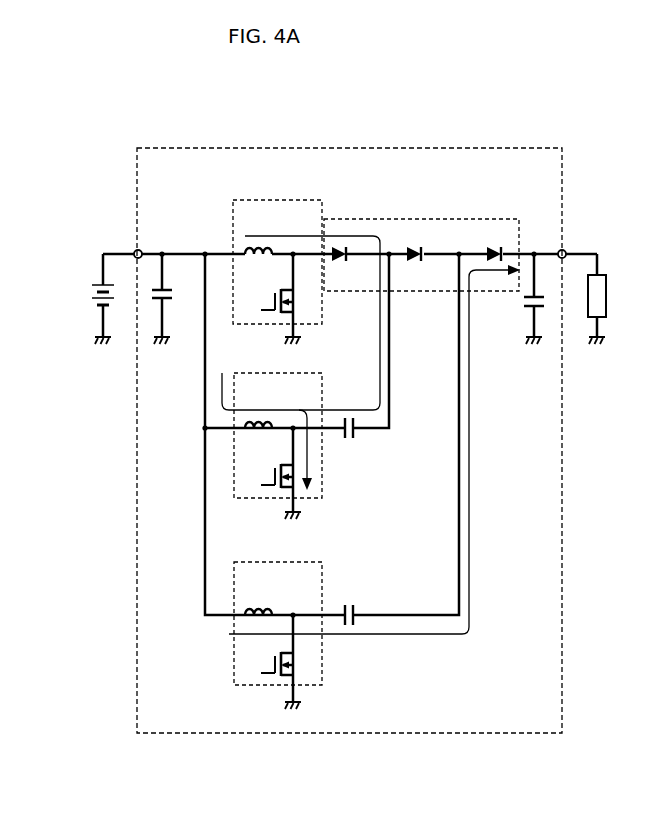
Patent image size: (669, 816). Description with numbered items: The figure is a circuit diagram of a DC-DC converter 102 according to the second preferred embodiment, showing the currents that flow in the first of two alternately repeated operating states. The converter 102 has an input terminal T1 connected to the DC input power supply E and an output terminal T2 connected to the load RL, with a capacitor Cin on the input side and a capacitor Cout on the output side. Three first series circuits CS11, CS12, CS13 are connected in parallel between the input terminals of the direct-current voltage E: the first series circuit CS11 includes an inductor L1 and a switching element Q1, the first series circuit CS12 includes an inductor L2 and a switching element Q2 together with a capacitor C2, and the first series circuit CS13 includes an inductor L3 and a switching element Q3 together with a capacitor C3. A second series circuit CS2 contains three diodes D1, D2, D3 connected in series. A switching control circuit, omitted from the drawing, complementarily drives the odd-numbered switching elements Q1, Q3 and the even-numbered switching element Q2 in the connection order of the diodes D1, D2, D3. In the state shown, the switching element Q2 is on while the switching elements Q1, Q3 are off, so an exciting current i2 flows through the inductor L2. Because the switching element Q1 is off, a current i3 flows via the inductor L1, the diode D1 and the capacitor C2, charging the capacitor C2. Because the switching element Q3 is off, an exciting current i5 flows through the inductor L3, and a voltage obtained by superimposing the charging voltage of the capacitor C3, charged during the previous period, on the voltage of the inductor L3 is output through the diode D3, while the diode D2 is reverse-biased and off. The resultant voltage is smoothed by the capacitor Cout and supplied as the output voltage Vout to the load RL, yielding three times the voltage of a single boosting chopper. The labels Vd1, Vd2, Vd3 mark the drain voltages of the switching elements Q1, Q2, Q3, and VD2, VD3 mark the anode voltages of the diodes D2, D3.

The DC-DC converter 102 is at (563, 147).
The first series circuit CS11 is at (302, 199).
The first series circuit CS12 is at (316, 373).
The first series circuit CS13 is at (318, 562).
The second series circuit CS2 is at (520, 218).
The input terminal T1 is at (127, 245).
The output terminal T2 is at (574, 245).
The DC input power supply E is at (95, 299).
The capacitor Cin is at (176, 299).
The capacitor Cout is at (517, 299).
The load RL is at (606, 295).
The inductor L1 is at (262, 246).
The inductor L2 is at (262, 420).
The inductor L3 is at (262, 606).
The switching element Q1 is at (275, 299).
The switching element Q2 is at (275, 473).
The switching element Q3 is at (275, 662).
The diode D1 is at (344, 245).
The diode D2 is at (420, 245).
The diode D3 is at (498, 245).
The capacitor C2 is at (349, 417).
The capacitor C3 is at (349, 604).
The drain voltage of switching element Q1 Vd1 is at (276, 272).
The drain voltage of switching element Q2 Vd2 is at (276, 447).
The drain voltage of switching element Q3 Vd3 is at (276, 627).
The anode voltage of diode D2 VD2 is at (397, 239).
The anode voltage of diode D3 VD3 is at (465, 241).
The output voltage Vout is at (541, 242).
The exciting current i2 is at (299, 438).
The current i3 is at (301, 323).
The exciting current i5 is at (374, 449).